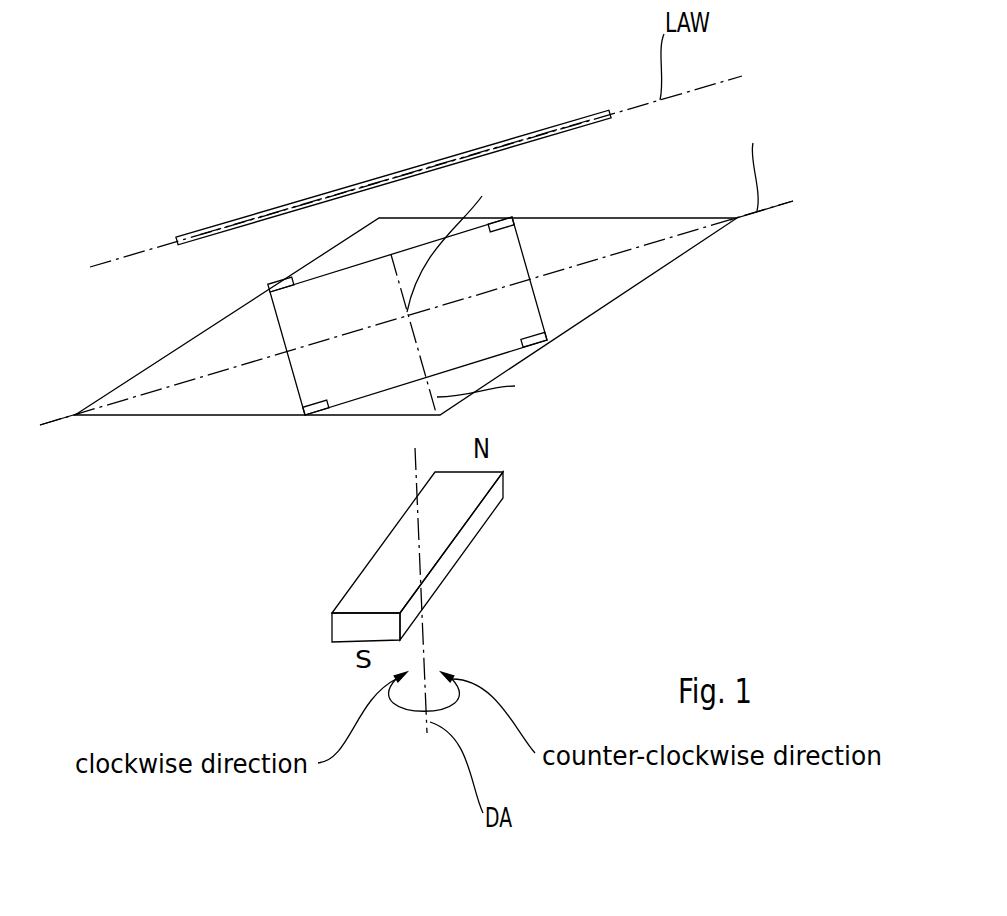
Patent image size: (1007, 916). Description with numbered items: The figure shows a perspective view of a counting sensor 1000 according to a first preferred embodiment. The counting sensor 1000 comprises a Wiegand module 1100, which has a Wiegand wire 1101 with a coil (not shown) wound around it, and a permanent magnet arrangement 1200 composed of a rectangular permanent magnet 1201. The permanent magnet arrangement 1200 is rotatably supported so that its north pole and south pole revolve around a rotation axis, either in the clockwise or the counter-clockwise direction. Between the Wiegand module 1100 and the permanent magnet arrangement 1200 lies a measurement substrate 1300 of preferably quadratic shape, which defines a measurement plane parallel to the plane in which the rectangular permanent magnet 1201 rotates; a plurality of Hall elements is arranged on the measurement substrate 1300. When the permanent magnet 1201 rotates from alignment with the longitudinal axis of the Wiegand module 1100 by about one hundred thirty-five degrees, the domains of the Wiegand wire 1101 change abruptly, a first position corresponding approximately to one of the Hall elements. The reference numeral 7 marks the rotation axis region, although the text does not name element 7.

The counting sensor 1000 is at (582, 20).
The Wiegand module 1100 is at (304, 187).
The Wiegand wire 1101 is at (480, 148).
The permanent magnet arrangement 1200 is at (501, 549).
The rectangular permanent magnet 1201 is at (505, 485).
The measurement substrate 1300 is at (628, 336).
The shaft 7 is at (425, 638).